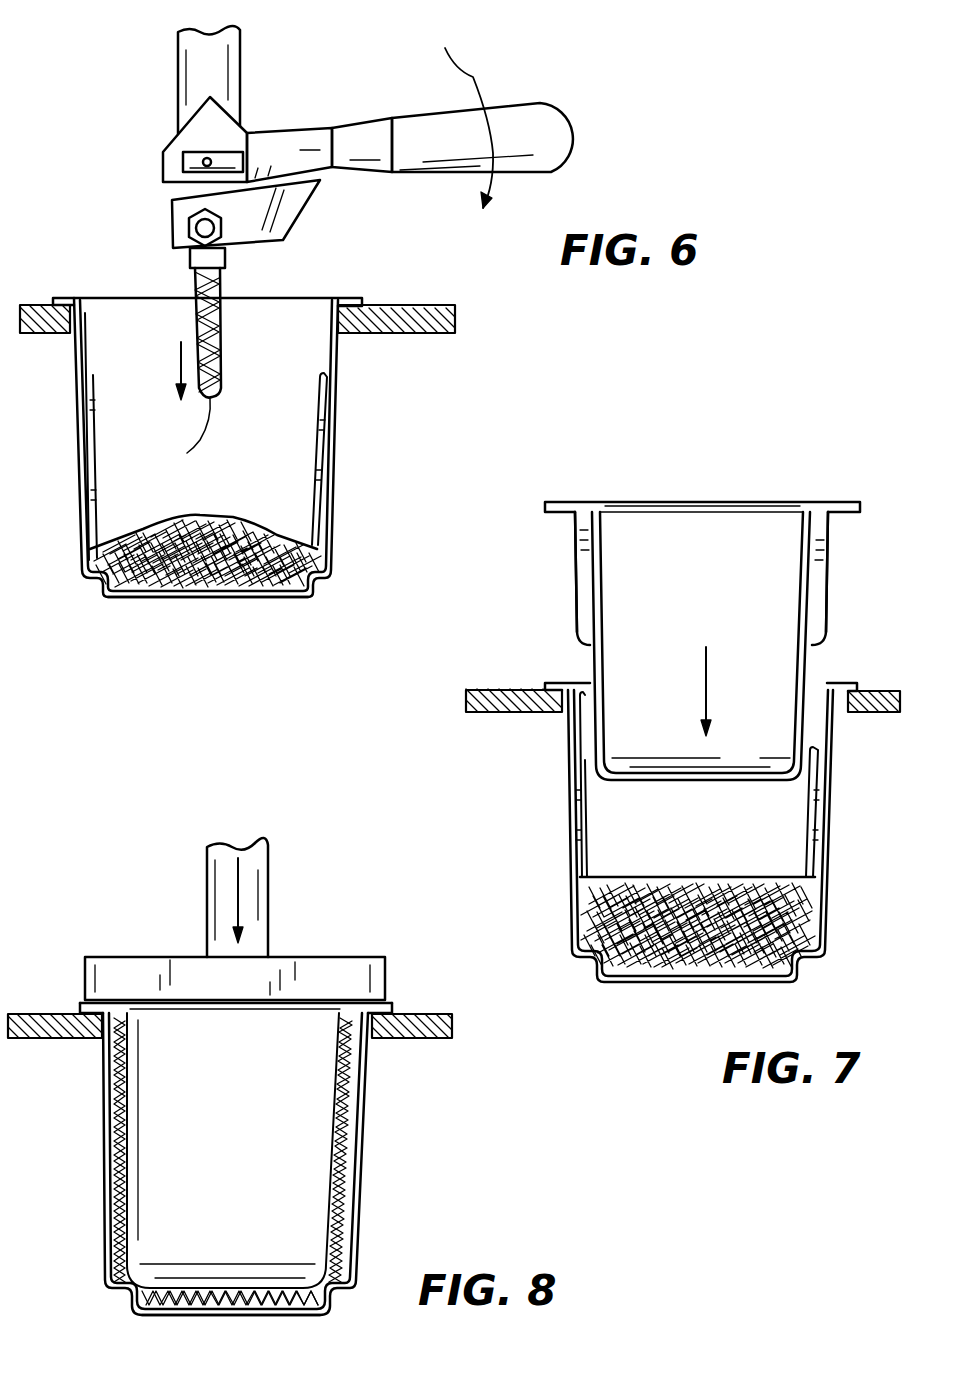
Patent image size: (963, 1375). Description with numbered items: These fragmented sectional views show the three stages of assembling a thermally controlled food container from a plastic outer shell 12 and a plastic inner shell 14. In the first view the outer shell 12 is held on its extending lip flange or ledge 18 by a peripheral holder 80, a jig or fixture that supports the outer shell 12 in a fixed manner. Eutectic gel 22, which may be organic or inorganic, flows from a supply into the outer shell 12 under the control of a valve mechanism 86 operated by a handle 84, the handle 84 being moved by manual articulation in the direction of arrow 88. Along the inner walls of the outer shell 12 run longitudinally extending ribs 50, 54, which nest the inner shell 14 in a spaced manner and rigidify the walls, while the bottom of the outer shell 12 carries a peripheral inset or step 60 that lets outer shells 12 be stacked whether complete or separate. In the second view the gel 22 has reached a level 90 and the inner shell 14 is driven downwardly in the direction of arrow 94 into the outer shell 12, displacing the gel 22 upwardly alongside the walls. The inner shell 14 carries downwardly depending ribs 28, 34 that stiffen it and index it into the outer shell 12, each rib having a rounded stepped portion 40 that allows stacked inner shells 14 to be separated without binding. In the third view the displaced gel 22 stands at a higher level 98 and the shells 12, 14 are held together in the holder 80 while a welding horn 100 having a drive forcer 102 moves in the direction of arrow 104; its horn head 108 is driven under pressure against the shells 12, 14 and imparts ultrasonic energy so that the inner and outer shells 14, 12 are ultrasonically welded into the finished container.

In FIG. 6, the outer shell 12 is at (249, 456).
In FIG. 7, the inner shell 14 is at (810, 657).
In FIG. 6, the lip flange or ledge 18 is at (355, 300).
In FIG. 6, the eutectic gel 22 is at (222, 527).
In FIG. 7, the eutectic gel 22 is at (697, 945).
In FIG. 8, the eutectic gel 22 is at (355, 1126).
In FIG. 7, the rib 28 is at (573, 533).
In FIG. 7, the rib 34 is at (835, 547).
In FIG. 7, the stepped portion 40 is at (580, 557).
In FIG. 6, the longitudinally extending rib 50 is at (92, 378).
In FIG. 7, the longitudinally extending rib 50 is at (578, 822).
In FIG. 6, the longitudinally extending rib 54 is at (325, 443).
In FIG. 7, the longitudinally extending rib 54 is at (820, 815).
In FIG. 6, the peripheral inset or step 60 is at (95, 583).
In FIG. 8, the peripheral inset or step 60 is at (340, 1303).
In FIG. 6, the peripheral holder 80 is at (445, 305).
In FIG. 7, the peripheral holder 80 is at (517, 710).
In FIG. 8, the peripheral holder 80 is at (47, 1040).
In FIG. 6, the handle 84 is at (555, 122).
In FIG. 6, the valve mechanism 86 is at (230, 138).
In FIG. 6, the arrow 88 is at (451, 112).
In FIG. 7, the level 90 is at (698, 873).
In FIG. 7, the arrow 94 is at (712, 667).
In FIG. 8, the level 98 is at (357, 1007).
In FIG. 8, the welding horn 100 is at (132, 892).
In FIG. 8, the drive forcer 102 is at (270, 870).
In FIG. 8, the arrow 104 is at (230, 878).
In FIG. 8, the horn head 108 is at (88, 975).